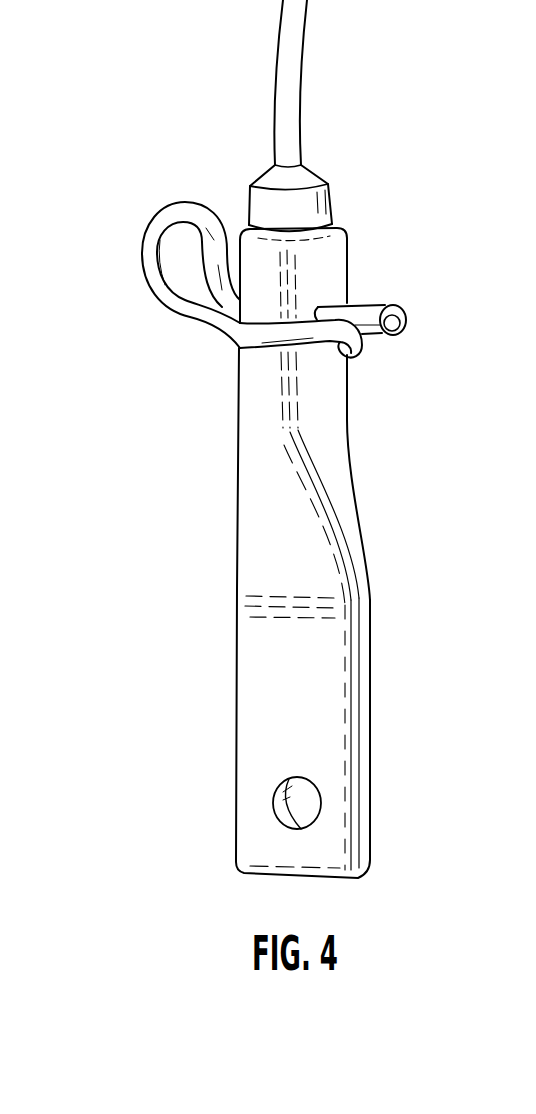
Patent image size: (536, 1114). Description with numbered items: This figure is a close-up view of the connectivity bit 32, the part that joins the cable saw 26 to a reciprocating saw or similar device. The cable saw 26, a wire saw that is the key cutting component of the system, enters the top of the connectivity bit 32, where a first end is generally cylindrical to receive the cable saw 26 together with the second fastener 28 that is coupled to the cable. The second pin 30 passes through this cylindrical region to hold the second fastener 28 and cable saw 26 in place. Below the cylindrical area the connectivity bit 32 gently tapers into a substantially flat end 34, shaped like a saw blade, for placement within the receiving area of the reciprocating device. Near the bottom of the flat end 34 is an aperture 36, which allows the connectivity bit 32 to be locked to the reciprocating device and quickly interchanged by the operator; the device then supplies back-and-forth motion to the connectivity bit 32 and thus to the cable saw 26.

The cable saw 26 is at (290, 36).
The second fastener 28 is at (298, 202).
The second pin 30 is at (150, 258).
The connectivity bit 32 is at (258, 428).
The substantially flat end 34 is at (257, 652).
The aperture 36 is at (297, 803).